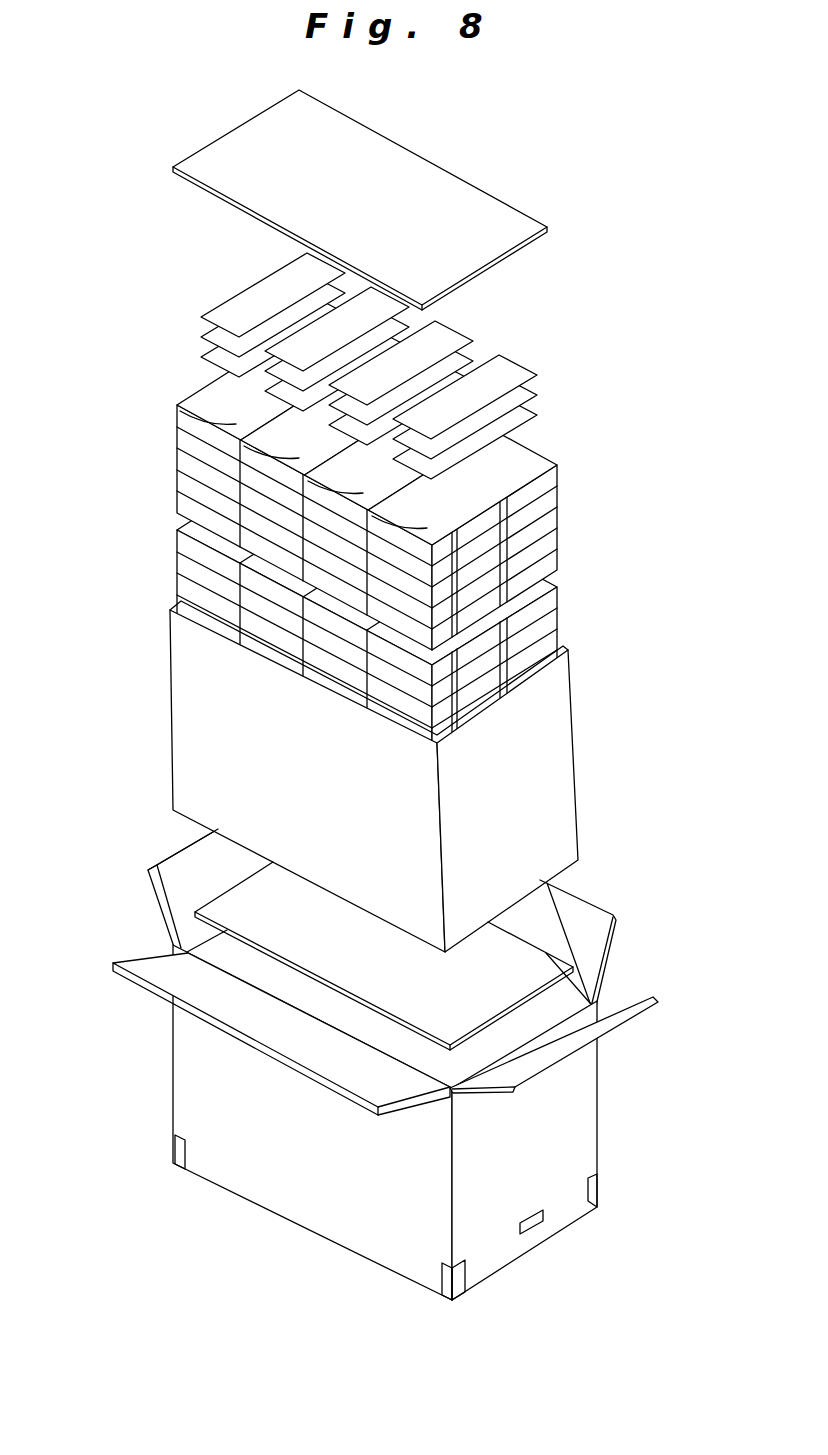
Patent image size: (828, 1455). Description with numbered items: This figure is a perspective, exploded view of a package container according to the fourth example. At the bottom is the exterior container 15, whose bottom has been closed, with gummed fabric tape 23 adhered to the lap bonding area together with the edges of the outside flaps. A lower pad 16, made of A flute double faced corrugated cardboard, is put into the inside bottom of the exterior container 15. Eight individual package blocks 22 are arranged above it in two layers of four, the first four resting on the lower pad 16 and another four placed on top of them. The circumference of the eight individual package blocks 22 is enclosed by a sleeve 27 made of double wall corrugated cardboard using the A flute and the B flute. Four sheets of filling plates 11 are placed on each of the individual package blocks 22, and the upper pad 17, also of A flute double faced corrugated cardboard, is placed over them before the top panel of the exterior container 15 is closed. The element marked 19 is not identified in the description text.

The filling plate 11 is at (213, 337).
The exterior container 15 is at (302, 1238).
The lower pad 16 is at (540, 960).
The upper pad 17 is at (440, 177).
The top cover of stack 19 is at (192, 397).
The individual package block 22 is at (170, 440).
The gummed fabric tape 23 is at (172, 1155).
The sleeve 27 is at (547, 743).